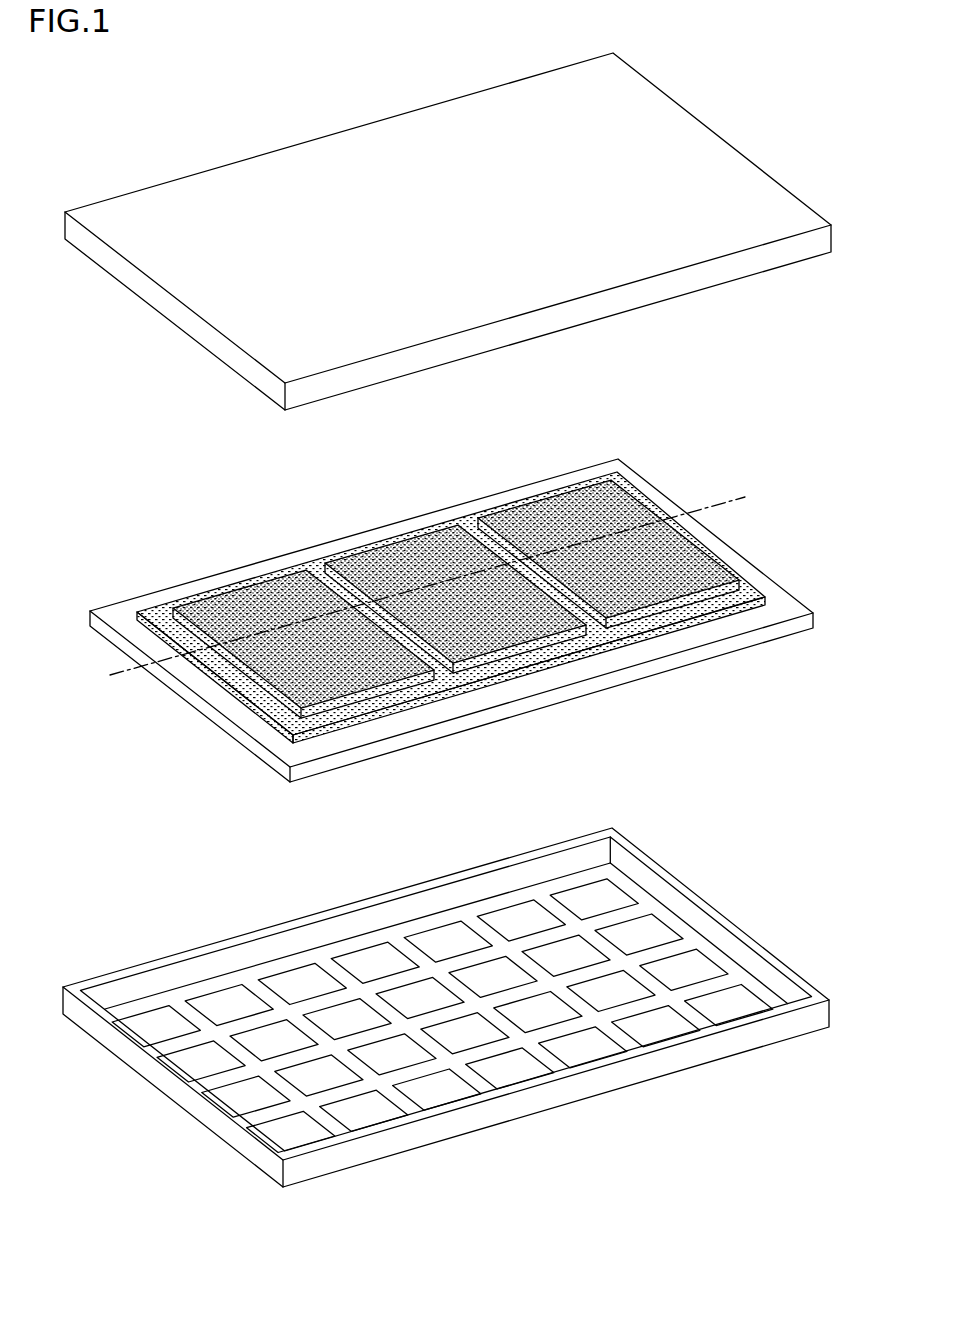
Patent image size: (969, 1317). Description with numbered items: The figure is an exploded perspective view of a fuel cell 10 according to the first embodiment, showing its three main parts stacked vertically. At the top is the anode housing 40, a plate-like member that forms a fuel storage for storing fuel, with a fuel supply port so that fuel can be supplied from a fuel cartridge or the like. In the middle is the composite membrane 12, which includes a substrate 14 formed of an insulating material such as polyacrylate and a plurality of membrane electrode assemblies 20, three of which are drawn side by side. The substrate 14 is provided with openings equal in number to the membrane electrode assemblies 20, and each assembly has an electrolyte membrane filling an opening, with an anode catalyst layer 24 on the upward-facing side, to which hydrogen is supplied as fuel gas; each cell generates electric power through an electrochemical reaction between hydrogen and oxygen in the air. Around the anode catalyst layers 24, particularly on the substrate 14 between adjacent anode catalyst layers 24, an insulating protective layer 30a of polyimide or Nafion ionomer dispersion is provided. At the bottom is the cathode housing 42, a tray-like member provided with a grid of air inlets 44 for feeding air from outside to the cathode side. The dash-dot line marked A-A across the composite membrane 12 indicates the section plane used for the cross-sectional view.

The fuel cell 10 is at (460, 1212).
The composite membrane 12 is at (445, 636).
The substrate 14 is at (118, 617).
The membrane electrode assembly 20 is at (468, 610).
The anode catalyst layer 24 is at (348, 673).
The insulating protective layer 30a is at (747, 590).
The anode housing 40 is at (717, 147).
The cathode housing 42 is at (449, 1007).
The air inlets 44 is at (703, 973).